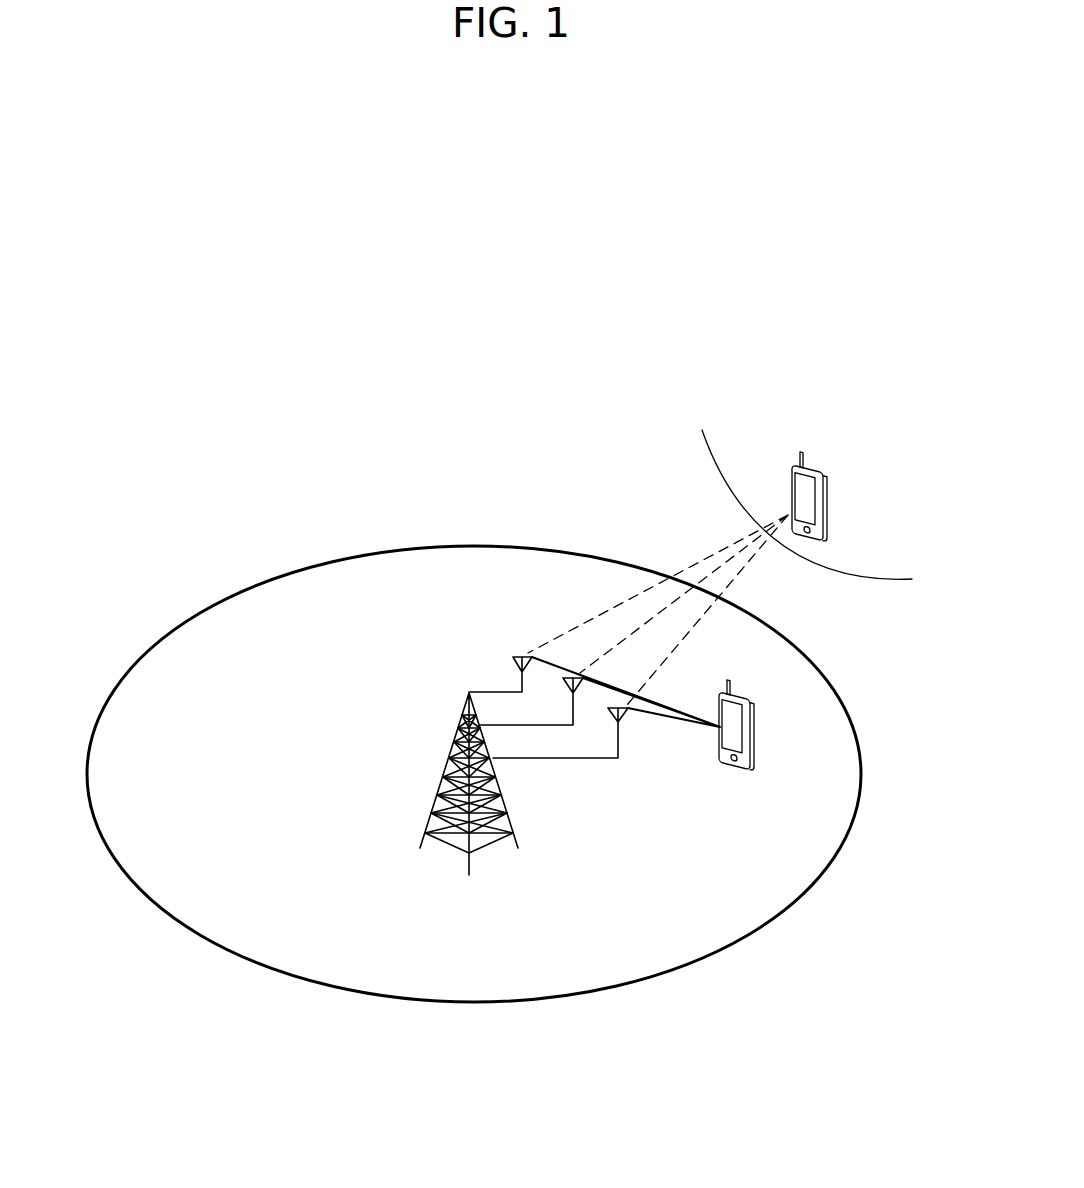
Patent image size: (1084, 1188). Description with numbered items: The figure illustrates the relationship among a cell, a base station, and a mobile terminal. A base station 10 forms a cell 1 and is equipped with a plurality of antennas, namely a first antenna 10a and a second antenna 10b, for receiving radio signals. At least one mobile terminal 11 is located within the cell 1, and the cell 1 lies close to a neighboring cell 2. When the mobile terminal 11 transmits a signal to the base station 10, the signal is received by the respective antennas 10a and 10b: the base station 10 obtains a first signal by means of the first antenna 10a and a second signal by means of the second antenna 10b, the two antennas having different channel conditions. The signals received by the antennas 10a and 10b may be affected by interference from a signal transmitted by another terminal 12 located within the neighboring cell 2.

The cell 1 is at (470, 545).
The neighboring cell 2 is at (702, 430).
The base station 10 is at (541, 861).
The first antenna 10a is at (590, 760).
The second antenna 10b is at (512, 726).
The mobile terminal 11 is at (731, 768).
The another terminal 12 is at (815, 462).